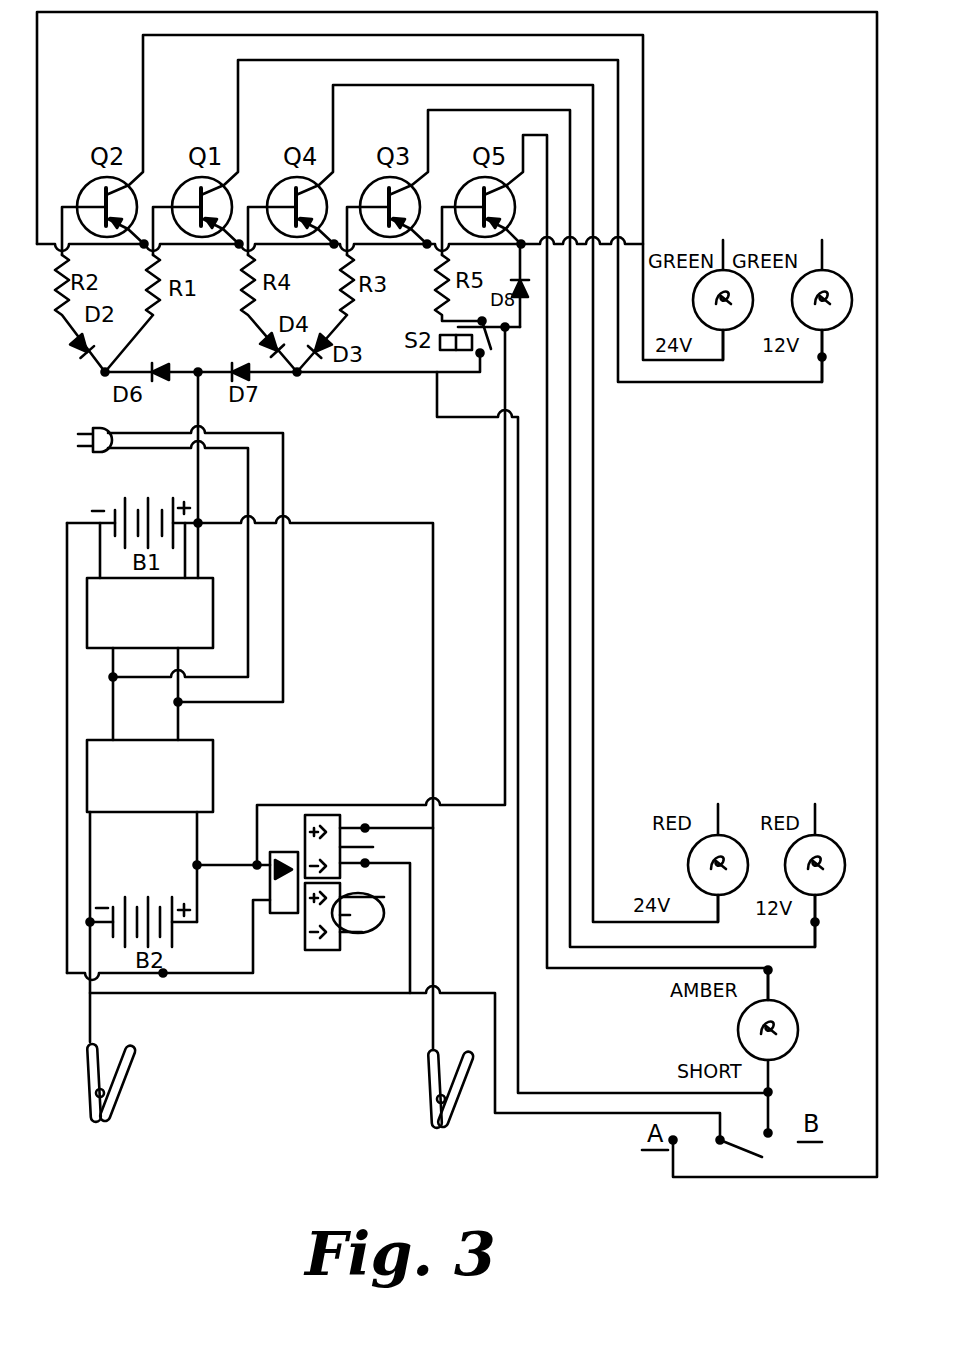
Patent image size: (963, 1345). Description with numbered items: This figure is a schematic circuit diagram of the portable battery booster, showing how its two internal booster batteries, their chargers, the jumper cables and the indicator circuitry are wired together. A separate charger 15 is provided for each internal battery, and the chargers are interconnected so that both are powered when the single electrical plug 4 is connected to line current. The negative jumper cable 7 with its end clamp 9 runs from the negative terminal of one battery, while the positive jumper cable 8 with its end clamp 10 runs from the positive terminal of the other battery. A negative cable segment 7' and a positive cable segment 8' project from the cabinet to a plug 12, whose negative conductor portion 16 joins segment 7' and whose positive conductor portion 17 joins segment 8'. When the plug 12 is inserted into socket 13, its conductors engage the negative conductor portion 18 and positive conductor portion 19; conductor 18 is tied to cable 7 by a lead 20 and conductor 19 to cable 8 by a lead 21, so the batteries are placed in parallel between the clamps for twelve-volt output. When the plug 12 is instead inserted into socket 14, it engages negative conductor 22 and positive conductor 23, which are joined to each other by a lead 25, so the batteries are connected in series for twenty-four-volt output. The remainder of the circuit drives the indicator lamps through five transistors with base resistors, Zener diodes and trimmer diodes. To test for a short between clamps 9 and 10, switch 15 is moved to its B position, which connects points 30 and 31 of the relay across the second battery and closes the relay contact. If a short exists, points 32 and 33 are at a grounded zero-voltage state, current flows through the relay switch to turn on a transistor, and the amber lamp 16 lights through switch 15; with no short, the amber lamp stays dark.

The electrical plug 4 is at (95, 452).
The negative jumper cable 7 is at (149, 954).
The negative cable segment 7' is at (126, 748).
The positive jumper cable 8 is at (315, 790).
The positive cable segment 8' is at (232, 846).
The negative end clamp 9 is at (118, 1104).
The positive end clamp 10 is at (455, 1124).
The plug 12 is at (270, 873).
The socket 13 is at (375, 849).
The socket 14 is at (358, 913).
The switch 15 is at (90, 630).
The negative conductor portion / amber lamp 16 is at (792, 1042).
The positive conductor portion / indicator lamp 17 is at (838, 884).
The negative conductor portion / indicator lamp 18 is at (742, 890).
The positive conductor portion / indicator lamp 19 is at (330, 815).
The lead / indicator lamp 20 is at (742, 322).
The lead 21 is at (386, 828).
The negative conductor 22 is at (330, 950).
The positive conductor 23 is at (375, 900).
The lead 25 is at (364, 934).
The relay point 30 is at (437, 374).
The relay point 31 is at (507, 337).
The circuit point 32 is at (199, 525).
The circuit point 33 is at (199, 372).